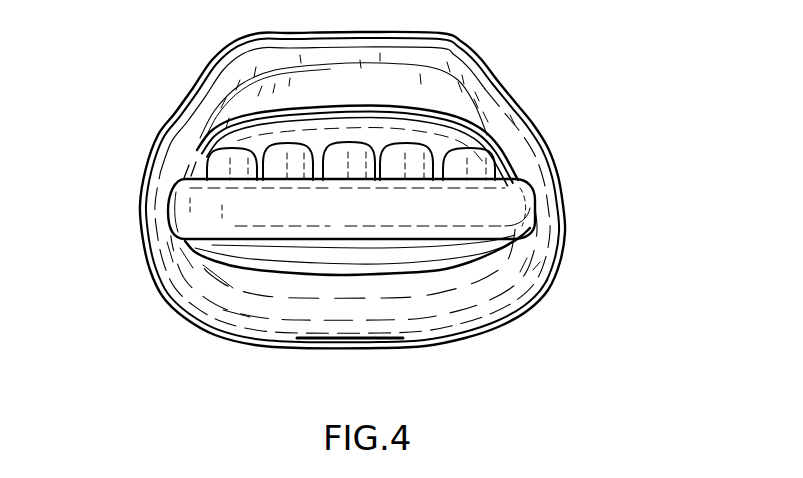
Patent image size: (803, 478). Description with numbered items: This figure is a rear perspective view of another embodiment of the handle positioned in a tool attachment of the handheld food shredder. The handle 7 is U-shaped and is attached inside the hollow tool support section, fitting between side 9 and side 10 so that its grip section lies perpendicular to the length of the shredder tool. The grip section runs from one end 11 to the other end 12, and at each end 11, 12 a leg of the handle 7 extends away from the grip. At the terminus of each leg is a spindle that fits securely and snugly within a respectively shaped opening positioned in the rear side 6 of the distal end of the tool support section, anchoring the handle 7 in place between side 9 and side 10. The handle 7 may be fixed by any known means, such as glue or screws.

The rear side 6 is at (360, 249).
The handle 7 is at (192, 223).
The side 9 is at (172, 208).
The side 10 is at (578, 232).
The end of the grip section 11 is at (182, 195).
The end of the grip section 12 is at (500, 203).